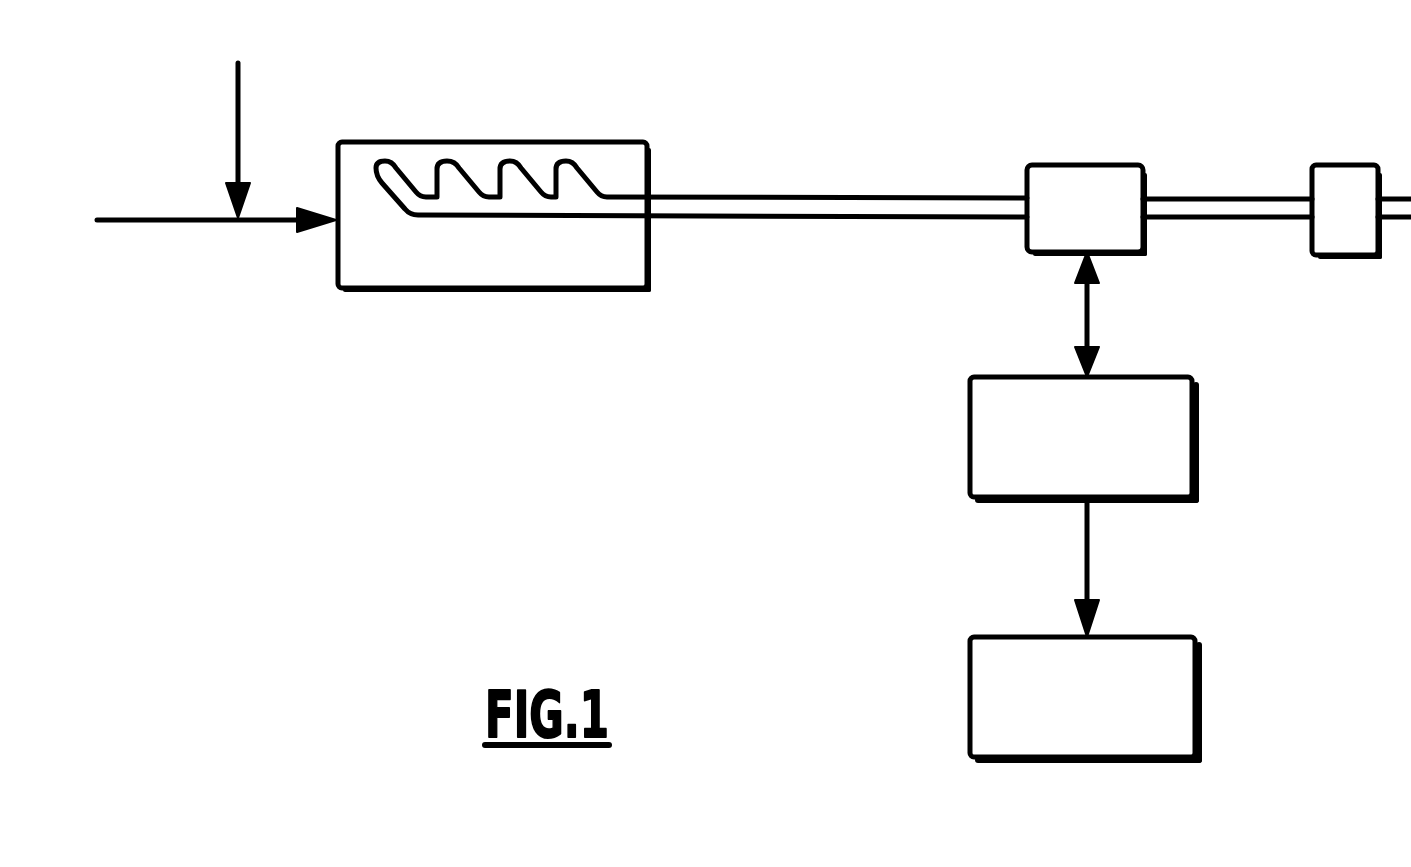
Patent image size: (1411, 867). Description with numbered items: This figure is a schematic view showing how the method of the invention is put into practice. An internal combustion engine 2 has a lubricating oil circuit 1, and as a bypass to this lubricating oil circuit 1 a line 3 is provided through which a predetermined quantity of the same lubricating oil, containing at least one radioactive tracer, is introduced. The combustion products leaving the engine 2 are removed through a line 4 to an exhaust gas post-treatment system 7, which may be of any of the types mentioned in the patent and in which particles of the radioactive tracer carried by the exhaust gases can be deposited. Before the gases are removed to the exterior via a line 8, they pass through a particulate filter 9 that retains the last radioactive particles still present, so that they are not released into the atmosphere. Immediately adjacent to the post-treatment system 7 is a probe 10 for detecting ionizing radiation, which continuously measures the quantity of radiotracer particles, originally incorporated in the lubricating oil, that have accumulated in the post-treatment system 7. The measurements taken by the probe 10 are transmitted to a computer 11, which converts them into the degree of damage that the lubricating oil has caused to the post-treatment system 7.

The lubricating oil circuit 1 is at (178, 222).
The internal combustion engine 2 is at (541, 262).
The line 3 is at (233, 143).
The line 4 is at (773, 203).
The exhaust gas post-treatment system 7 is at (1092, 203).
The line 8 is at (1223, 207).
The particulate filter 9 is at (1338, 210).
The probe 10 is at (1157, 447).
The computer 11 is at (1160, 702).